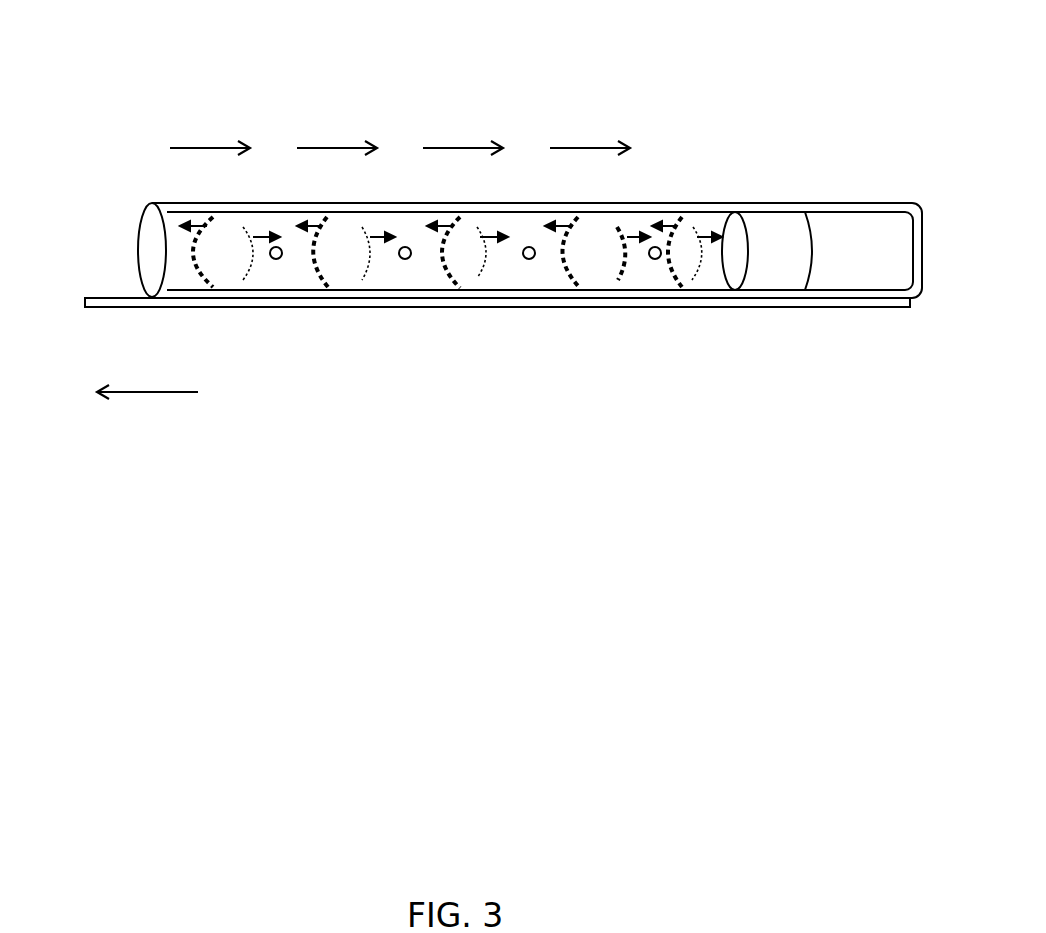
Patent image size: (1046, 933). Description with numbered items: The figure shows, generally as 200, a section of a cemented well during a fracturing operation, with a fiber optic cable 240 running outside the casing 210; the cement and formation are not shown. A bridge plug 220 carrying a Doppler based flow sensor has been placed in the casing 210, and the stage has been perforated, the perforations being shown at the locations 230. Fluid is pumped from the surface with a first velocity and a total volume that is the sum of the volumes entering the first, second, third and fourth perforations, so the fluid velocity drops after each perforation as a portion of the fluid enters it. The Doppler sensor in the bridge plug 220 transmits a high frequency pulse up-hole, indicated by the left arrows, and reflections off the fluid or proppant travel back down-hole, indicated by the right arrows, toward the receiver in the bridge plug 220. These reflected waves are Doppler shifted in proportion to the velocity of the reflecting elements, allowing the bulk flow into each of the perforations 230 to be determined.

The section of a cemented well 200 is at (464, 215).
The casing 210 is at (170, 202).
The bridge plug 220 is at (772, 225).
The perforations 230 is at (276, 259).
The fiber optic cable 240 is at (110, 308).